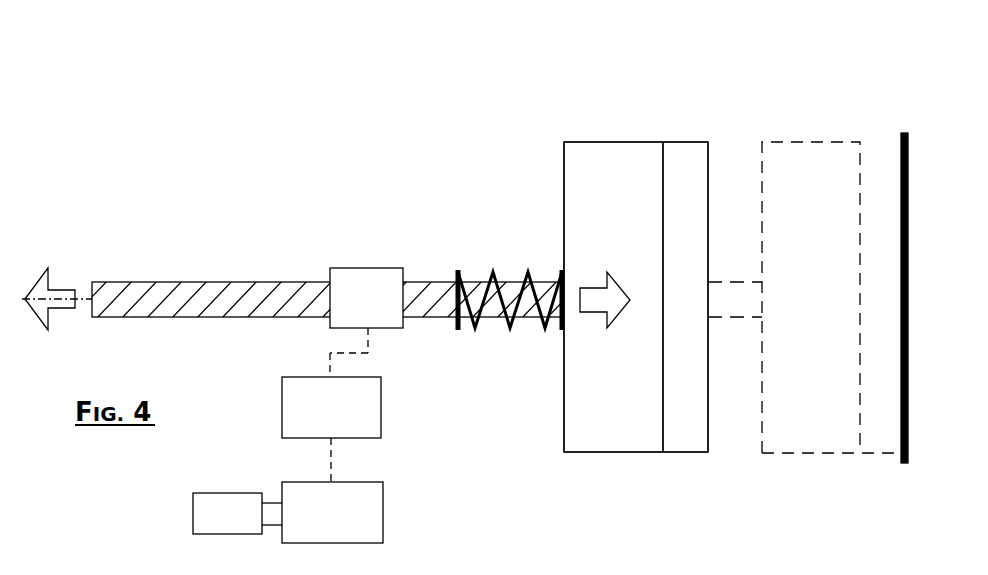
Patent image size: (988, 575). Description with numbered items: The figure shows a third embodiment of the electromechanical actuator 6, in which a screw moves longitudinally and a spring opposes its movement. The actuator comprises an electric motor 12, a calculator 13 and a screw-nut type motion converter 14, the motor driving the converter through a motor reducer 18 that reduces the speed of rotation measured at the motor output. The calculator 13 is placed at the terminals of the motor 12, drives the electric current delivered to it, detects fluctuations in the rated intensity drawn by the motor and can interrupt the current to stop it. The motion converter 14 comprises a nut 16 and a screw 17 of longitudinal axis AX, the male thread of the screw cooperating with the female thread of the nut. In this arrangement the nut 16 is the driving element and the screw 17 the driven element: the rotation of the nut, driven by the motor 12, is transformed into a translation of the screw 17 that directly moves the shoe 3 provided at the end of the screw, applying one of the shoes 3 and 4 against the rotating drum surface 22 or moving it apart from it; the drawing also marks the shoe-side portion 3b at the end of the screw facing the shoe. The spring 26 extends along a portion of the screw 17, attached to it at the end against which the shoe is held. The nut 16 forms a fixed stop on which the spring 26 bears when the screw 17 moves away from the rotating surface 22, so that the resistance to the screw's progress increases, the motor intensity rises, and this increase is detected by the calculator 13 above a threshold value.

The electromechanical actuator 6 is at (148, 78).
The axis AX is at (90, 300).
The screw 17 is at (197, 295).
The nut 16 is at (368, 275).
The motion converter 14 is at (328, 212).
The spring 26 is at (496, 256).
The shoe 3 is at (584, 124).
The shoe 4 is at (636, 297).
The contact surface 3b is at (689, 440).
The rotating drum surface 22 is at (900, 165).
The motor reducer 18 is at (331, 407).
The electric motor 12 is at (332, 512).
The calculator 13 is at (237, 513).